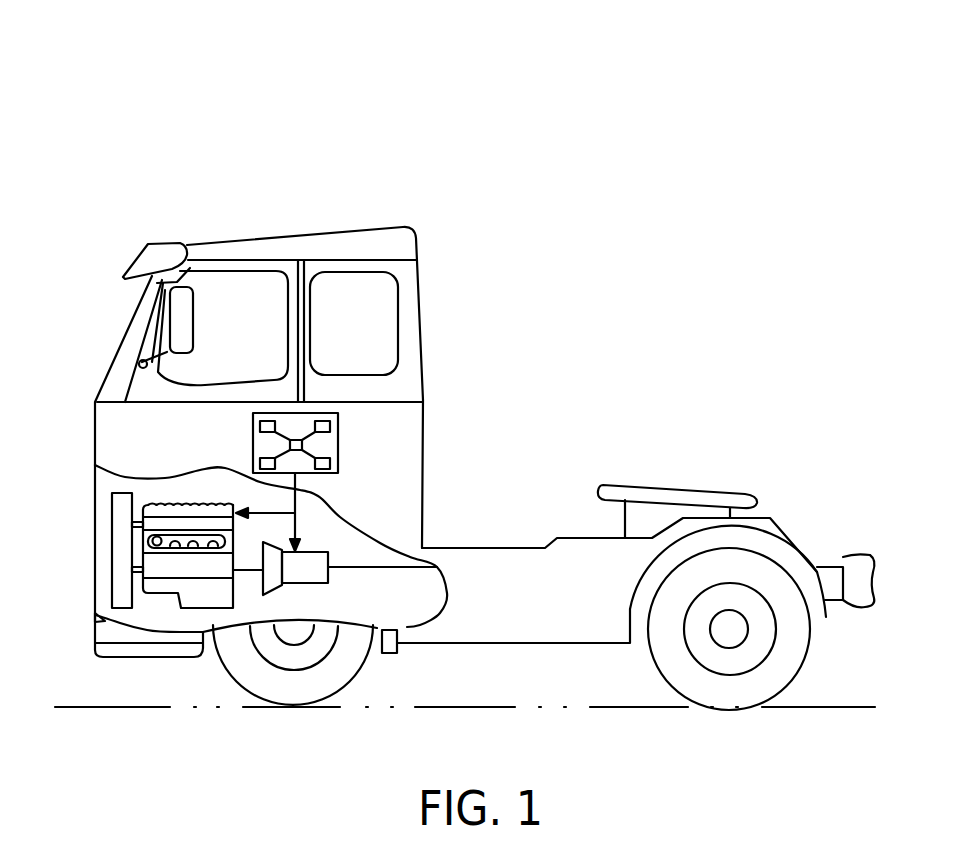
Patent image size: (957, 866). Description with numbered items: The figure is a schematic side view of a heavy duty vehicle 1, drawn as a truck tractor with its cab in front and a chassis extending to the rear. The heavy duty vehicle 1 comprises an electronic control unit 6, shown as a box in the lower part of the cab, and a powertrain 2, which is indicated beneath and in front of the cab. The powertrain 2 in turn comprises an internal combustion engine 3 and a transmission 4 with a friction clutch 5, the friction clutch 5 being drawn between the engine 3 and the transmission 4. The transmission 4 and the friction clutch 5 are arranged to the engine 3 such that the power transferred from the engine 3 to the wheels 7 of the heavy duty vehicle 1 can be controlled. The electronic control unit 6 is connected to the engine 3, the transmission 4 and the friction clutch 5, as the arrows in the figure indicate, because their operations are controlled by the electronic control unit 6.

The heavy duty vehicle 1 is at (357, 86).
The powertrain 2 is at (329, 539).
The internal combustion engine 3 is at (162, 562).
The transmission 4 is at (308, 570).
The friction clutch 5 is at (273, 572).
The electronic control unit 6 is at (322, 443).
The wheels 7 is at (296, 631).